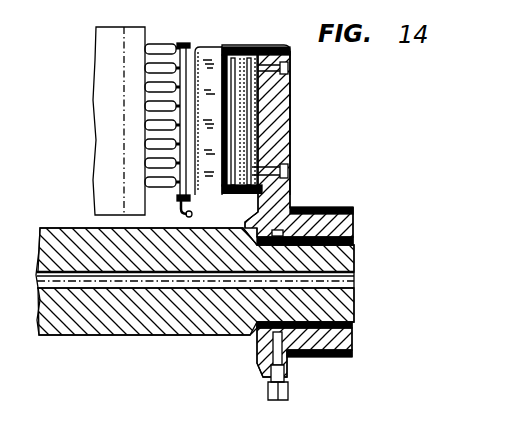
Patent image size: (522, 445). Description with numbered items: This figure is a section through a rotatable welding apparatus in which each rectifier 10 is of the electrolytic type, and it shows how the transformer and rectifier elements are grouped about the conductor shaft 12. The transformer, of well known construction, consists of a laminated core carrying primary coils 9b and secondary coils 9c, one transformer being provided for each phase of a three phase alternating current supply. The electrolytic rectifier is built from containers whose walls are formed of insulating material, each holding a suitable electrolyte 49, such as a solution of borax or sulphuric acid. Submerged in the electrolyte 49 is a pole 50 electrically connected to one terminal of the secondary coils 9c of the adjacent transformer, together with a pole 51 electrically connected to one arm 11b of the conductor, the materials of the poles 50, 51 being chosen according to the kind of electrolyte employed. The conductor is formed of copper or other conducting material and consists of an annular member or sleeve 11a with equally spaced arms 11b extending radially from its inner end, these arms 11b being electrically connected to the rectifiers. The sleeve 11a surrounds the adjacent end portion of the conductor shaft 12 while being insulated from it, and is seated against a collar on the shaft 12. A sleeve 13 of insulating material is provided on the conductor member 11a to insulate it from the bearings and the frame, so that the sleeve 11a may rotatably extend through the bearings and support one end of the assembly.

The primary coils 9b is at (160, 190).
The secondary coils 9c is at (163, 62).
The rectifier 10 is at (113, 122).
The annular member or sleeve 11a is at (343, 231).
The arms 11b is at (272, 144).
The conductor shaft 12 is at (207, 336).
The sleeve 13 is at (257, 45).
The electrolyte 49 is at (240, 204).
The pole 50 is at (220, 60).
The pole 51 is at (268, 113).